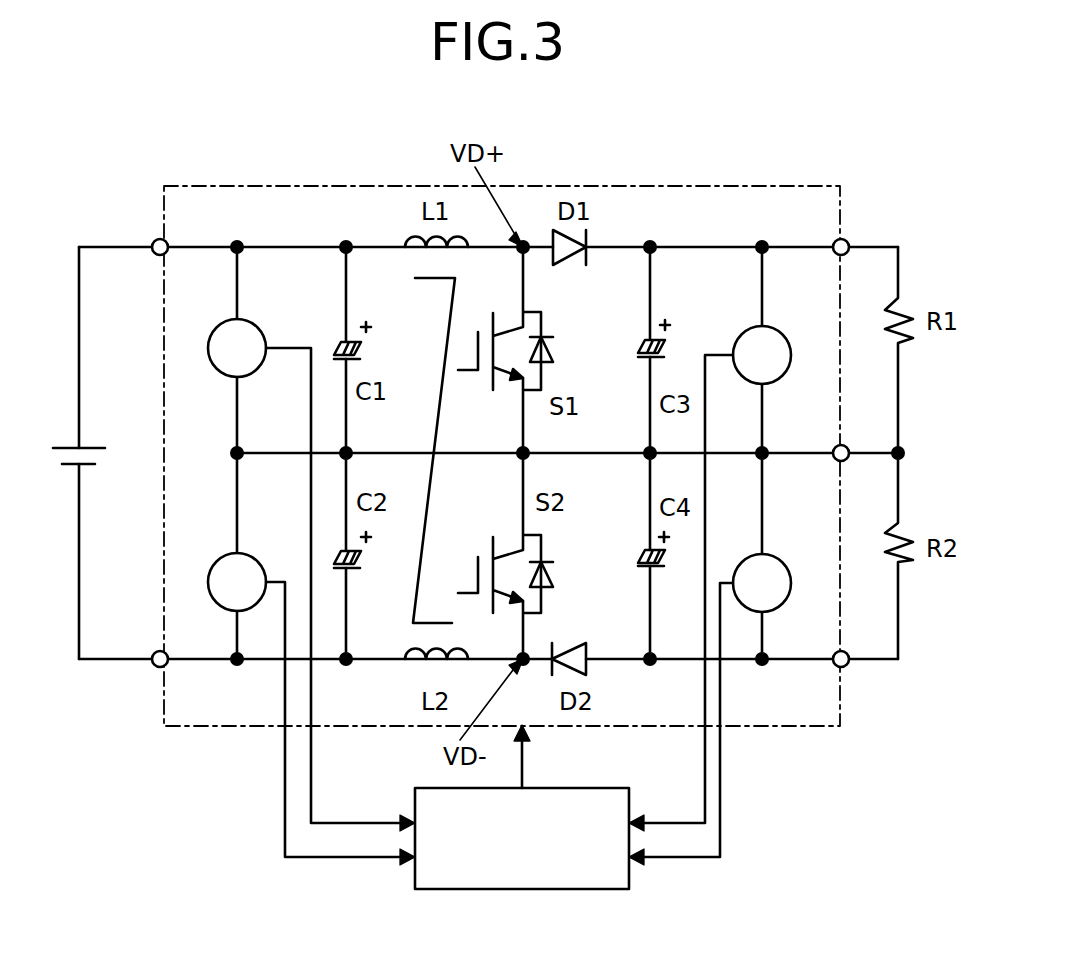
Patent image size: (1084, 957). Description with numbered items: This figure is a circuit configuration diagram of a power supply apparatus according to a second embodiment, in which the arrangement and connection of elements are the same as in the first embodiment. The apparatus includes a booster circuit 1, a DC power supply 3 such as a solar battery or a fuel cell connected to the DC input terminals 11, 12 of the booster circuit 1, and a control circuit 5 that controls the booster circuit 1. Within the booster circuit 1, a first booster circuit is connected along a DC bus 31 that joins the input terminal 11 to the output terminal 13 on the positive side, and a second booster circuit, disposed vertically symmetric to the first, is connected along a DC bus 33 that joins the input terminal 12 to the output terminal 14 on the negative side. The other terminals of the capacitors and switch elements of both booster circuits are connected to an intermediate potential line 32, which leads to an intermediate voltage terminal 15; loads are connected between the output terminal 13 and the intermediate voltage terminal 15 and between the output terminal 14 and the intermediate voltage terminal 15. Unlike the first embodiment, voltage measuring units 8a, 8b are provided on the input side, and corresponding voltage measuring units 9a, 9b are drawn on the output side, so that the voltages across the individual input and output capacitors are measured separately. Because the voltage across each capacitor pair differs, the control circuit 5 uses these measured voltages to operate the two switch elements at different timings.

The booster circuit 1 is at (608, 186).
The DC power supply 3 is at (62, 446).
The control circuit 5 is at (572, 890).
The voltage measuring unit 8a is at (224, 327).
The voltage measuring unit 8b is at (224, 560).
The output voltage sensor V3 9a is at (775, 333).
The output voltage sensor V4 9b is at (775, 561).
The DC input terminal 11 is at (157, 241).
The DC input terminal 12 is at (155, 667).
The output terminal 13 is at (848, 240).
The output terminal 14 is at (848, 667).
The intermediate voltage terminal 15 is at (846, 446).
The DC bus 31 is at (708, 247).
The intermediate potential line 32 is at (393, 453).
The DC bus 33 is at (680, 660).